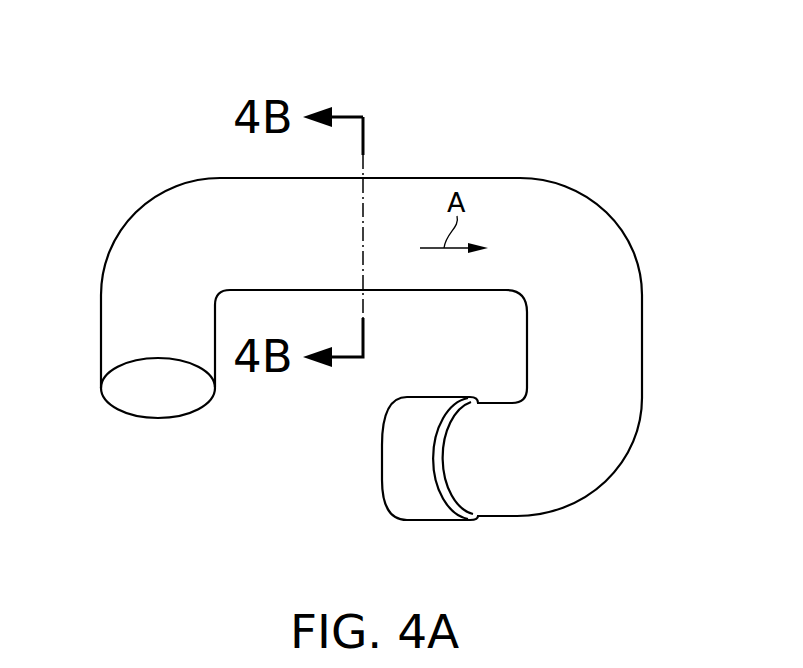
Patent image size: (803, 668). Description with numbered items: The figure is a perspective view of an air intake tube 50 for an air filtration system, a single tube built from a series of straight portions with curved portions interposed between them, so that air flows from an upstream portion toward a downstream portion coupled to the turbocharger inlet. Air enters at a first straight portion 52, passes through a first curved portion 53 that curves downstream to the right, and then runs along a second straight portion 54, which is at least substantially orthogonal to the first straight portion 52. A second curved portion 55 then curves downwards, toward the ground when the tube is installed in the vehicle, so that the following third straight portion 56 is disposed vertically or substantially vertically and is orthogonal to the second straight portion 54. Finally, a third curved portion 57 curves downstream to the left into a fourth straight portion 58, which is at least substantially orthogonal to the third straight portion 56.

The air intake tube 50 is at (178, 107).
The first straight portion 52 is at (100, 330).
The first curved portion 53 is at (138, 217).
The second straight portion 54 is at (403, 177).
The second curved portion 55 is at (605, 217).
The third straight portion 56 is at (642, 328).
The third curved portion 57 is at (612, 468).
The fourth straight portion 58 is at (495, 516).